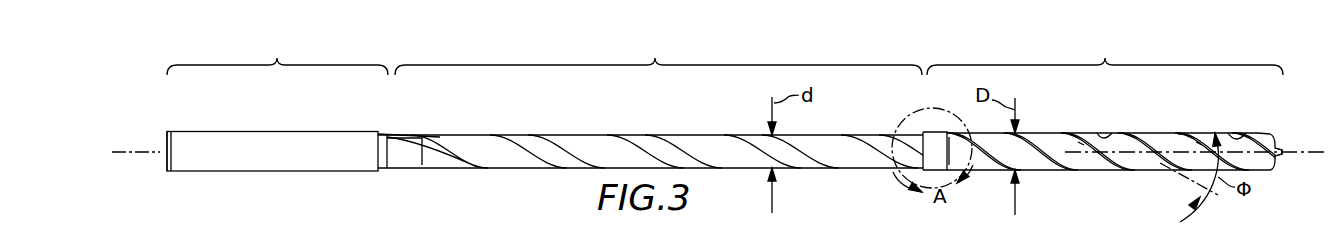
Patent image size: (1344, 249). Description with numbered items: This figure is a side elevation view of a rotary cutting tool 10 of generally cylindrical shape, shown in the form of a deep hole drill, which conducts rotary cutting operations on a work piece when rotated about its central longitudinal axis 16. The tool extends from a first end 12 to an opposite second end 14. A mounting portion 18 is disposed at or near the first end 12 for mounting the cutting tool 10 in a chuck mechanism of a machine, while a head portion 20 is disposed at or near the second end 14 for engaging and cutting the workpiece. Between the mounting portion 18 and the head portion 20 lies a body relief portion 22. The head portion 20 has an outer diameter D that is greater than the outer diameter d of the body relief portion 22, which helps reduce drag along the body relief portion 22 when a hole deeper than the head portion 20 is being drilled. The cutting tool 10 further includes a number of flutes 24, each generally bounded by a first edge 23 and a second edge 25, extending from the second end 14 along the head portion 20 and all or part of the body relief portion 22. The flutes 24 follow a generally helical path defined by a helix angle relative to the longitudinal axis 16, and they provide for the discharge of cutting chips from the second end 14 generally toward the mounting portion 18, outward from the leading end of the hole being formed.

The rotary cutting tool 10 is at (722, 119).
The first end 12 is at (160, 163).
The second end 14 is at (1283, 165).
The central longitudinal axis 16 is at (1313, 149).
The mounting portion 18 is at (277, 102).
The head portion 20 is at (1116, 101).
The body relief portion 22 is at (667, 101).
The first edge 23 is at (1099, 136).
The flutes 24 is at (1082, 140).
The second edge 25 is at (1065, 133).